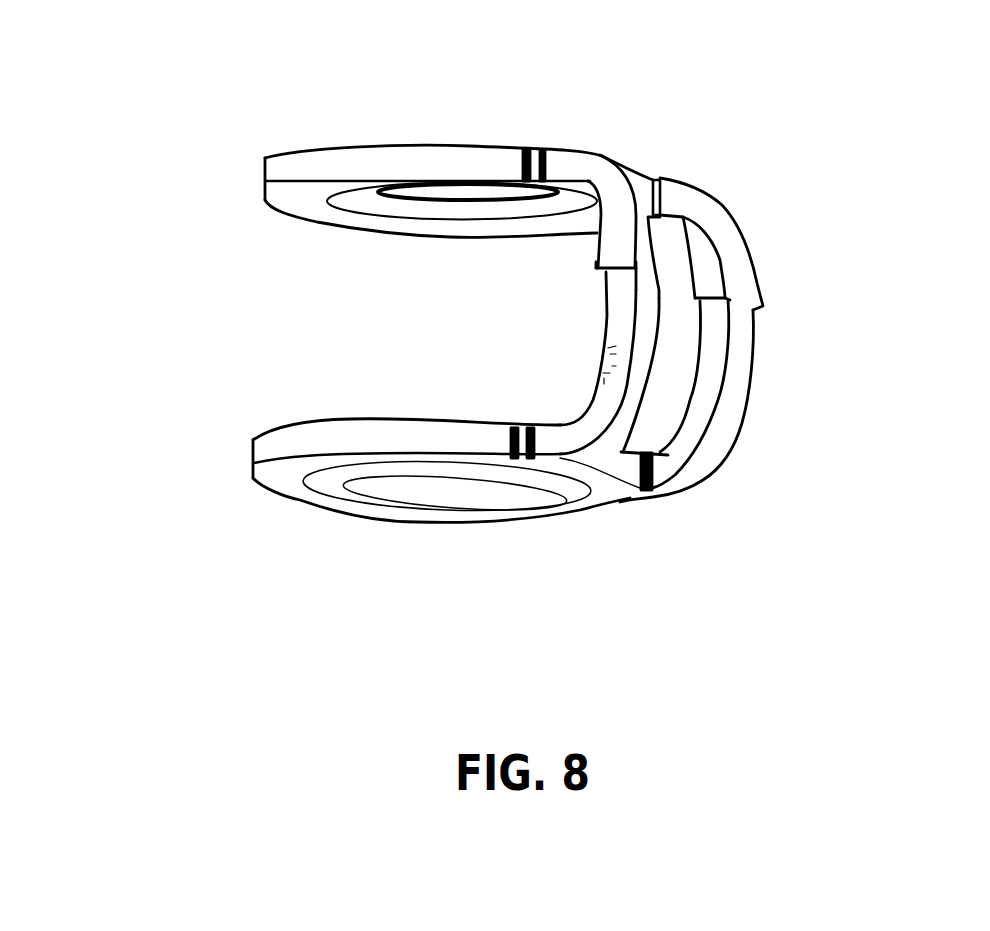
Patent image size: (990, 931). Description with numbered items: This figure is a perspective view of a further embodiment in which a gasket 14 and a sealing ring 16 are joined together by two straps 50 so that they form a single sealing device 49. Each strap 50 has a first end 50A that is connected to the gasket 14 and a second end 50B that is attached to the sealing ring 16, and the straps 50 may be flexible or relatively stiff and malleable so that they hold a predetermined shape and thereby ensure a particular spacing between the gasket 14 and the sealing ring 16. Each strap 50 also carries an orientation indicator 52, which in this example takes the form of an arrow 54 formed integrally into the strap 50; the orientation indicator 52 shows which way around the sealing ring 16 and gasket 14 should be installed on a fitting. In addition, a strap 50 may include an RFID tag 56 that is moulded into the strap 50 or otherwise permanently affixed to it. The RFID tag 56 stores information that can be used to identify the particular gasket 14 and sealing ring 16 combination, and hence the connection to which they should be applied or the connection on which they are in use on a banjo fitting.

The sealing device 49 is at (536, 323).
The gasket 14 is at (343, 163).
The sealing ring 16 is at (347, 433).
The strap 50 is at (725, 417).
The first end 50A is at (595, 170).
The second end 50B is at (577, 437).
The orientation indicator 52 is at (760, 266).
The arrow 54 is at (613, 255).
The RFID tag 56 is at (597, 367).